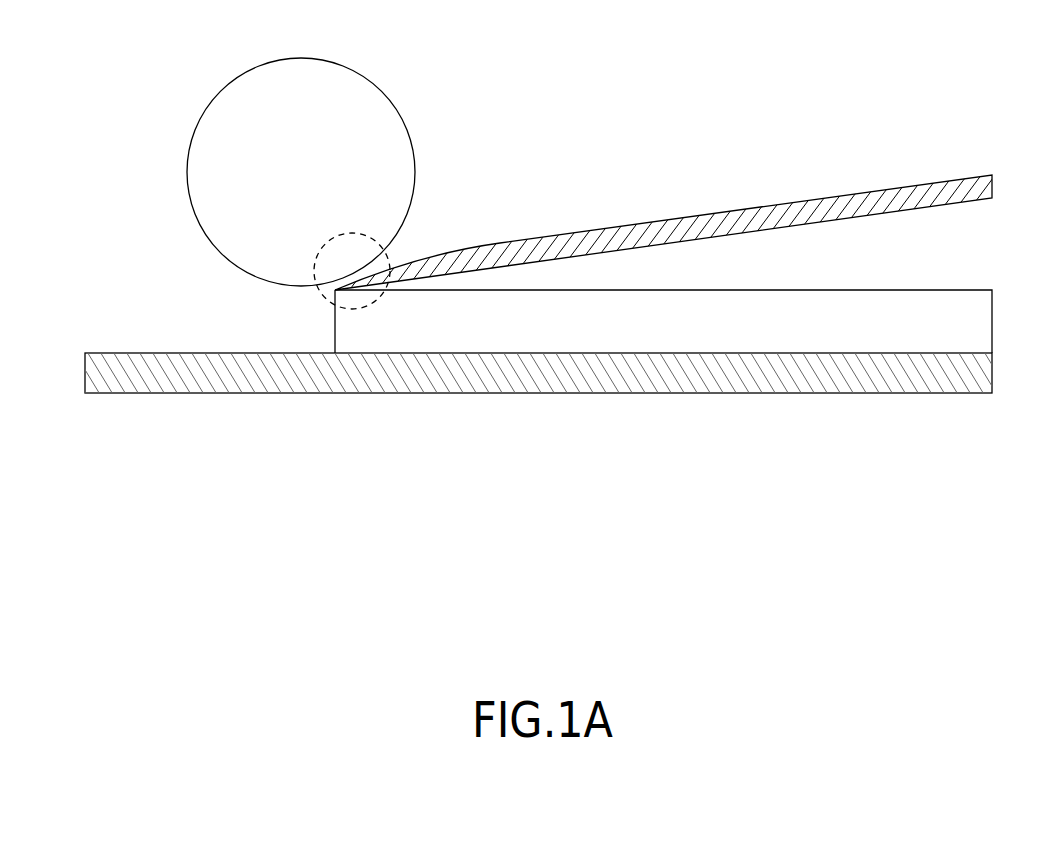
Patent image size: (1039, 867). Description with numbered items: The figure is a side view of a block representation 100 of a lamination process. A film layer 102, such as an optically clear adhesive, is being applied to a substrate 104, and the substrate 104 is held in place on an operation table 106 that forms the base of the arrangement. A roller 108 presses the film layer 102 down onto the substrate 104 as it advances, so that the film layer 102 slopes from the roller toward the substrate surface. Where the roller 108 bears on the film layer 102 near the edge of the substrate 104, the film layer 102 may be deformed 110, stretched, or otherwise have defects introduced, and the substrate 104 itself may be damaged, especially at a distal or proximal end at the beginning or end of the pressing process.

The block representation 100 is at (906, 136).
The film layer 102 is at (685, 218).
The substrate 104 is at (950, 290).
The operation table 106 is at (125, 353).
The roller 108 is at (333, 63).
The deformed region 110 is at (380, 253).